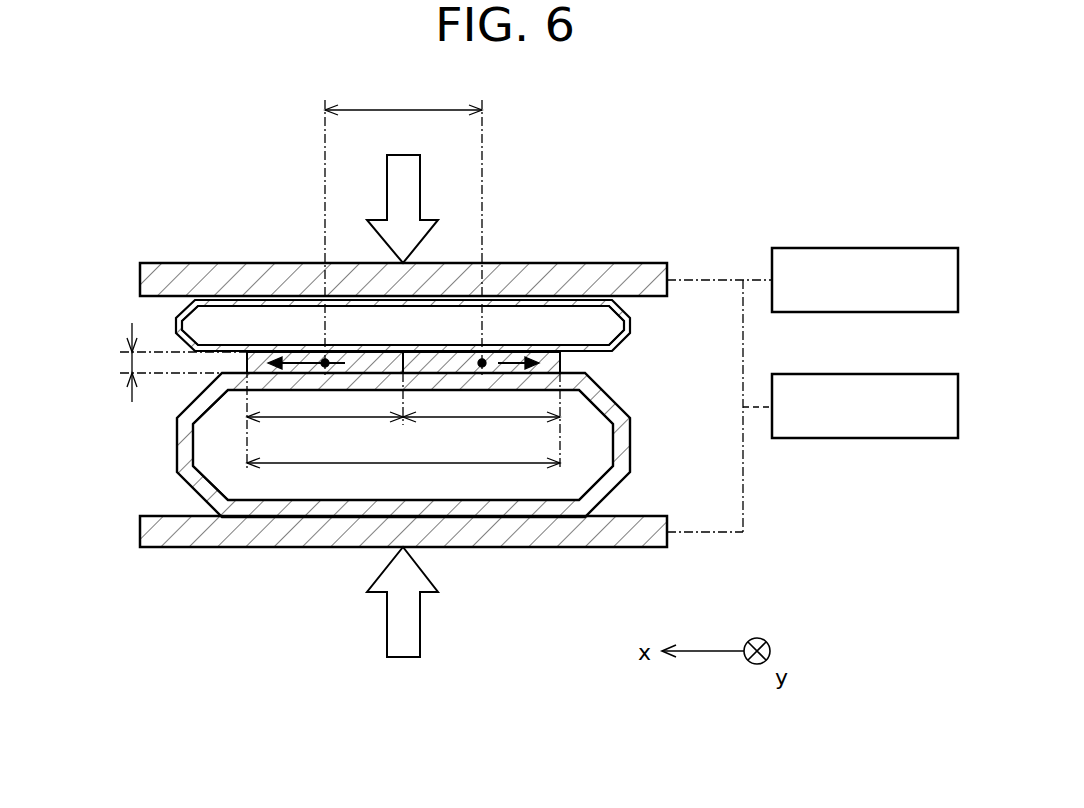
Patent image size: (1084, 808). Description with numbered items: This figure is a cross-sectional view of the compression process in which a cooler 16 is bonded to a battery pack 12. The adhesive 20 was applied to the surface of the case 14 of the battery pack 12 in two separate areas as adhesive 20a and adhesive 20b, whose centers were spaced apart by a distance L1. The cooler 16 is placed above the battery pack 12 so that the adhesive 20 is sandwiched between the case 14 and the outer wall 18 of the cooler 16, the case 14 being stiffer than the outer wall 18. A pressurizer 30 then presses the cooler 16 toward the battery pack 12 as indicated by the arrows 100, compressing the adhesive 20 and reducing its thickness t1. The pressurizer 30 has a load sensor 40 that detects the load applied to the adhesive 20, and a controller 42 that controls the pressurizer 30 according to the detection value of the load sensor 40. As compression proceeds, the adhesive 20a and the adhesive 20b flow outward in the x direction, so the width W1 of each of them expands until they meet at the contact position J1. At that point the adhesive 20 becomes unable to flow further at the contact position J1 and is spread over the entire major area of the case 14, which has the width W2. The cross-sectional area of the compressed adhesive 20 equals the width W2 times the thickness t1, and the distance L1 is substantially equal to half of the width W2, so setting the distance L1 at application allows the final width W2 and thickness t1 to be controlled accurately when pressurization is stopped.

The arrows 100 is at (421, 205).
The pressurizer 30 is at (826, 212).
The controller 42 is at (922, 247).
The load sensor 40 is at (922, 373).
The cooler 16 is at (641, 313).
The outer wall 18 is at (630, 328).
The adhesive 20 is at (402, 282).
The adhesive 20a is at (313, 350).
The adhesive 20b is at (493, 348).
The contact position J1 is at (445, 345).
The case 14 is at (618, 445).
The battery pack 12 is at (639, 468).
The distance L1 is at (403, 224).
The width W1 is at (403, 411).
The width W2 is at (403, 478).
The thickness t1 is at (130, 362).